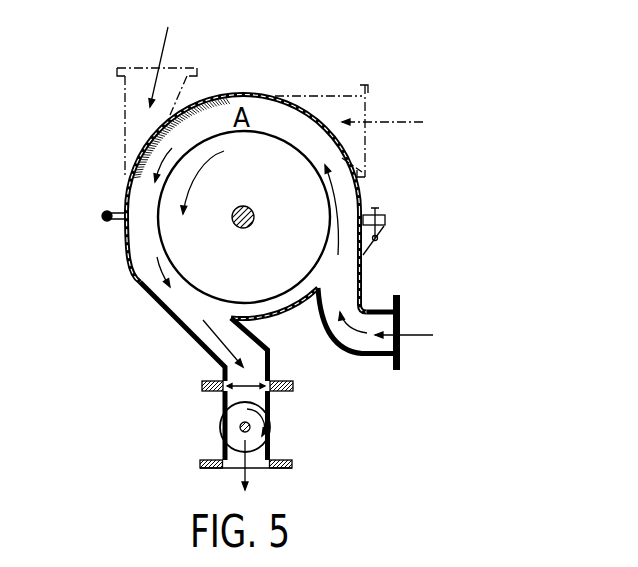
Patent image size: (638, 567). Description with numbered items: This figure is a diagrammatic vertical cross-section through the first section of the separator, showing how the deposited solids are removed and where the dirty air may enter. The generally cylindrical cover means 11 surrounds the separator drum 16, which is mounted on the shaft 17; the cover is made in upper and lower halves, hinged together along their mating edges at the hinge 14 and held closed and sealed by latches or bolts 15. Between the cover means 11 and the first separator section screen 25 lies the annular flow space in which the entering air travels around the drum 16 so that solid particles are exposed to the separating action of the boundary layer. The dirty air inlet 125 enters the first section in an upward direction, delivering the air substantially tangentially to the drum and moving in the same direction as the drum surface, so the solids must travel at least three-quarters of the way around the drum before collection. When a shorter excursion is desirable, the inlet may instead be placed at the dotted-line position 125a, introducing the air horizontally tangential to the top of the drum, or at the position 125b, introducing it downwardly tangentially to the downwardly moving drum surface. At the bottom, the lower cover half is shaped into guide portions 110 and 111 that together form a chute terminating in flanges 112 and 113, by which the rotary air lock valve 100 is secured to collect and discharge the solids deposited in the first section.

The cover means 11 is at (247, 91).
The hinge 14 is at (104, 213).
The latches or bolts 15 is at (379, 212).
The separator drum 16 is at (275, 143).
The shaft 17 is at (254, 213).
The first separator section screen 25 is at (222, 150).
The rotary air lock valve 100 is at (271, 424).
The guide portion 110 is at (161, 311).
The guide portion 111 is at (266, 345).
The flange 112 is at (206, 377).
The flange 113 is at (292, 380).
The dirty air inlet 125 is at (400, 323).
The dirty air inlet alternative position 125a is at (369, 101).
The dirty air inlet alternative position 125b is at (142, 67).